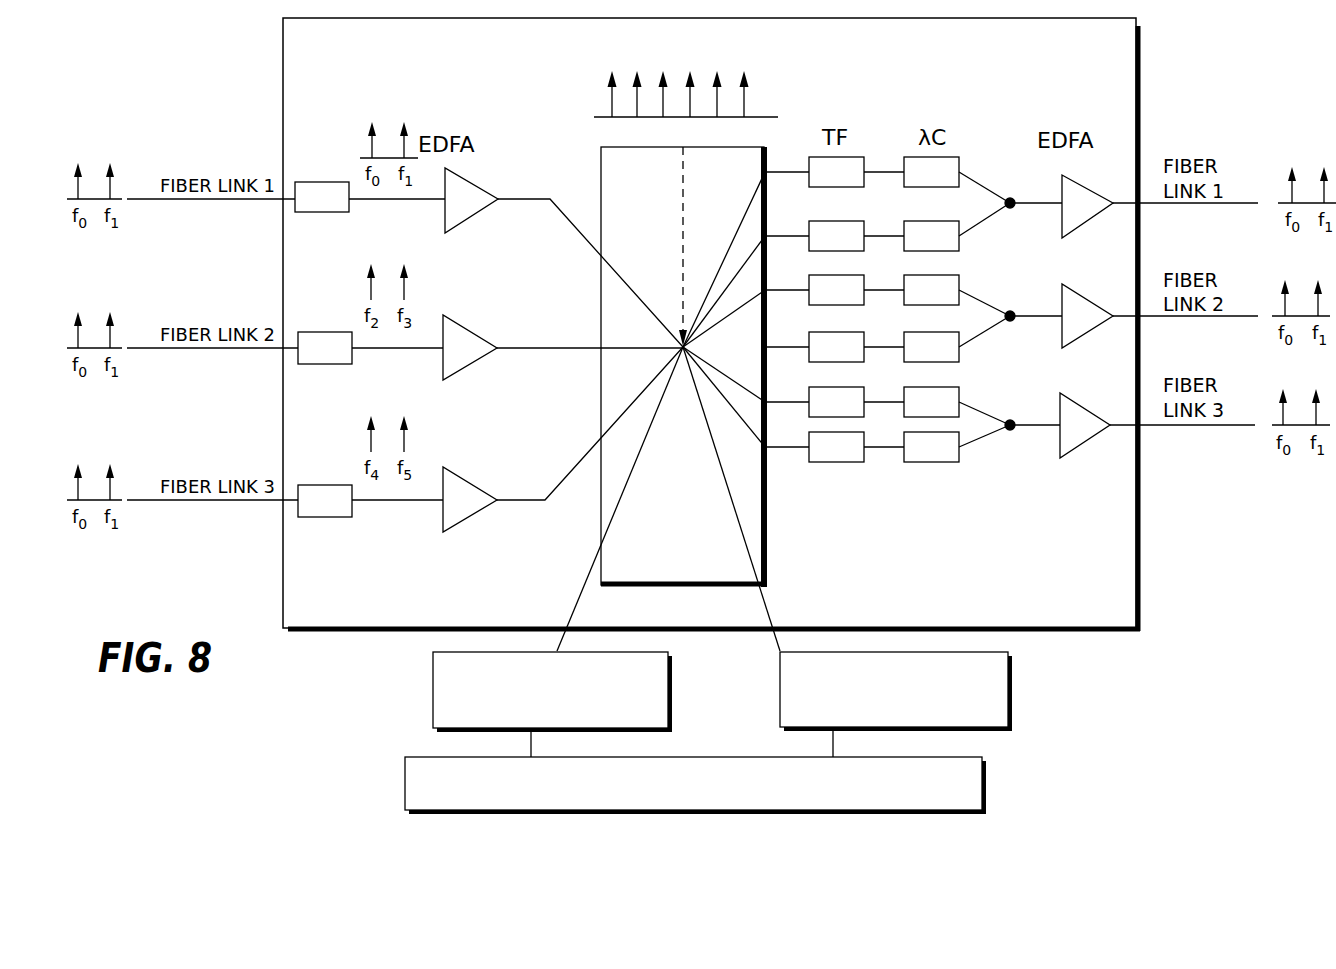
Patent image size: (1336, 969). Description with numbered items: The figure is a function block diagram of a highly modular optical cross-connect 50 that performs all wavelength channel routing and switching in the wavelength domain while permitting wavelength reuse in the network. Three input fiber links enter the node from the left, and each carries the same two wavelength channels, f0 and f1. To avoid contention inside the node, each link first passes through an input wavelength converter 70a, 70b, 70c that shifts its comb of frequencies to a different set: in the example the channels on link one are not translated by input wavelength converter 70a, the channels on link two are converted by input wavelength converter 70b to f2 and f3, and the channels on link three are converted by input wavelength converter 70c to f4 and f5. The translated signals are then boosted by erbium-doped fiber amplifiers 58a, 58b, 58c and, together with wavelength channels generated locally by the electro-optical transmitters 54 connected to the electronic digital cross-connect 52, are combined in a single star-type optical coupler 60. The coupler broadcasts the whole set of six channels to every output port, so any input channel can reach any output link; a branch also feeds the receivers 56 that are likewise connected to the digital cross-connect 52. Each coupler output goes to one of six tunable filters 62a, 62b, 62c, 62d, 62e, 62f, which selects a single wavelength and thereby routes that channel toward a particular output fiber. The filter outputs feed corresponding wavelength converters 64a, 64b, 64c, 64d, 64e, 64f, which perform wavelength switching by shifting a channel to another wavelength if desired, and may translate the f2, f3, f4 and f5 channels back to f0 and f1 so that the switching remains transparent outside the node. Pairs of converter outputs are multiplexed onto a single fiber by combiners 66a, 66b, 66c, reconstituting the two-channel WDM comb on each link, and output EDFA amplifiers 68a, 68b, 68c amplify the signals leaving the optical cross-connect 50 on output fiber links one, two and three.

The optical cross-connect 50 is at (711, 324).
The digital cross-connect 52 is at (984, 774).
The electro-optical transmitters 54 is at (441, 713).
The receivers 56 is at (997, 706).
The optical amplifier 58a is at (461, 195).
The optical amplifier 58b is at (461, 343).
The optical amplifier 58c is at (461, 495).
The optical coupler 60 is at (606, 204).
The tunable filter 62a is at (832, 188).
The tunable filter 62b is at (832, 252).
The tunable filter 62c is at (832, 306).
The tunable filter 62d is at (832, 363).
The tunable filter 62e is at (832, 418).
The tunable filter 62f is at (828, 463).
The wavelength converter 64a is at (926, 188).
The wavelength converter 64b is at (926, 252).
The wavelength converter 64c is at (926, 306).
The wavelength converter 64d is at (926, 363).
The wavelength converter 64e is at (926, 418).
The wavelength converter 64f is at (926, 463).
The combiner 66a is at (1011, 209).
The combiner 66b is at (1011, 322).
The combiner 66c is at (1011, 431).
The output EDFA amplifier 68a is at (1086, 201).
The output EDFA amplifier 68b is at (1083, 299).
The output EDFA amplifier 68c is at (1086, 423).
The input wavelength converter 70a is at (318, 213).
The input wavelength converter 70b is at (322, 365).
The input wavelength converter 70c is at (322, 518).